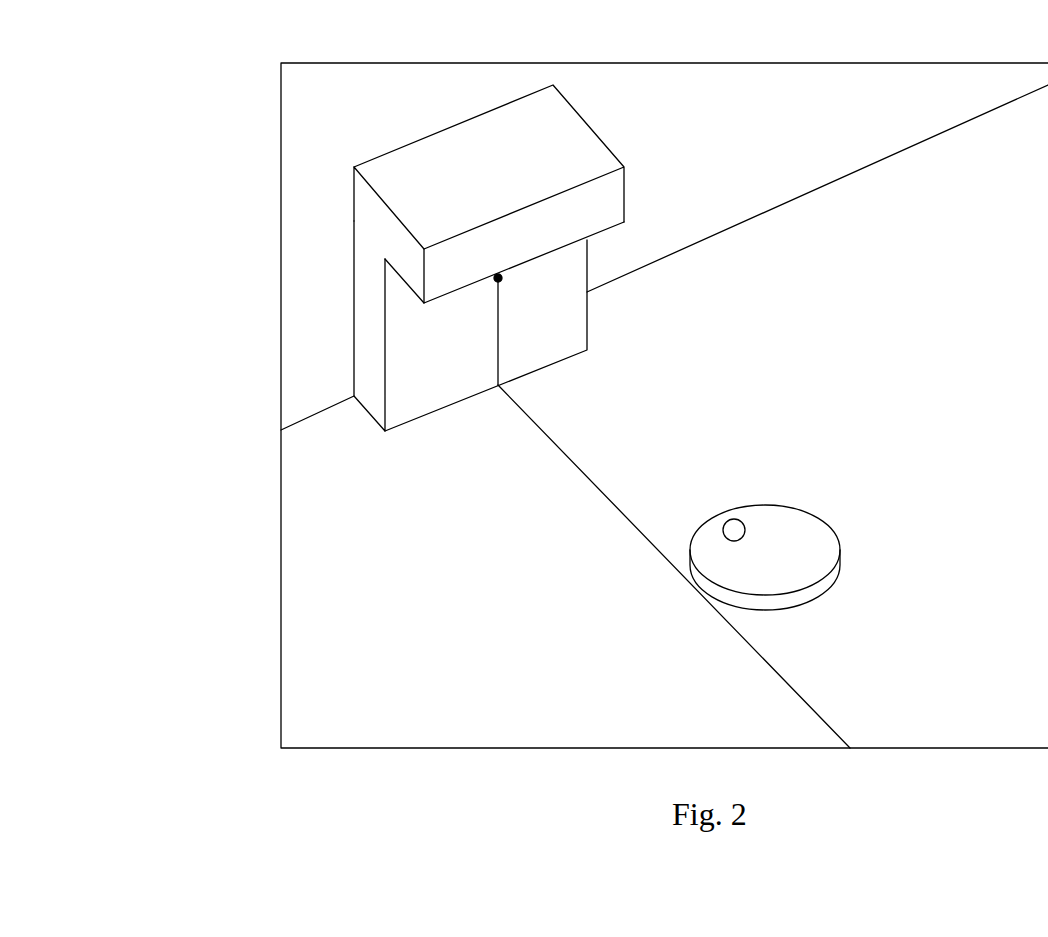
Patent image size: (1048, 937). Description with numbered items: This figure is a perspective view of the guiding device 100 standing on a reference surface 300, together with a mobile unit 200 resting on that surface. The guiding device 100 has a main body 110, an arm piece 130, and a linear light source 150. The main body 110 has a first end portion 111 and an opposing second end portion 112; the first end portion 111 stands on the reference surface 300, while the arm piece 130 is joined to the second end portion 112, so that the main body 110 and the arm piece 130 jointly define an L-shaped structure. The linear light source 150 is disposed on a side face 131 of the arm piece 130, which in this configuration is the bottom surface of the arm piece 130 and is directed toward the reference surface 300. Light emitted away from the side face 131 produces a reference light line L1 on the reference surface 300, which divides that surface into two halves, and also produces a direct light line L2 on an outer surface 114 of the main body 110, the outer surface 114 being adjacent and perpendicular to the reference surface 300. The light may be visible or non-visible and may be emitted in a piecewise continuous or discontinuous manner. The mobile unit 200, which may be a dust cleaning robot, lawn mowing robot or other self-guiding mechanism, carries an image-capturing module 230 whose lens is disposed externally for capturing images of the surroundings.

The guiding device 100 is at (474, 251).
The main body 110 is at (446, 326).
The first end portion 111 is at (367, 380).
The second end portion 112 is at (390, 207).
The outer surface 114 is at (545, 340).
The arm piece 130 is at (423, 165).
The side face 131 is at (400, 283).
The linear light source 150 is at (502, 280).
The mobile unit 200 is at (804, 523).
The image-capturing module 230 is at (736, 519).
The reference surface 300 is at (330, 682).
The reference light line L1 is at (630, 520).
The direct light line L2 is at (497, 345).